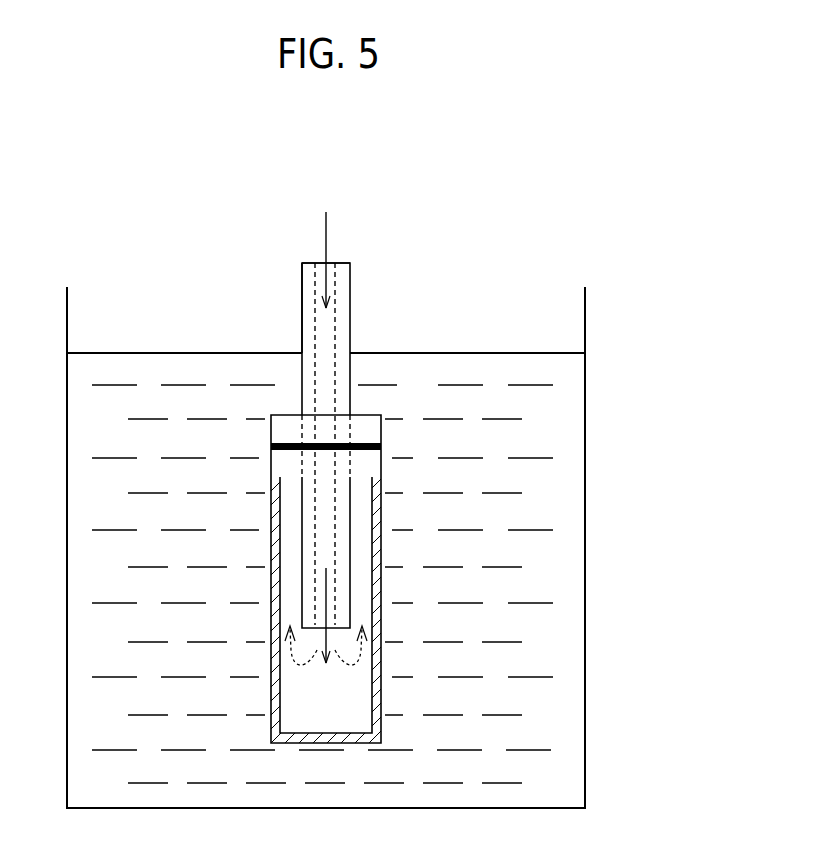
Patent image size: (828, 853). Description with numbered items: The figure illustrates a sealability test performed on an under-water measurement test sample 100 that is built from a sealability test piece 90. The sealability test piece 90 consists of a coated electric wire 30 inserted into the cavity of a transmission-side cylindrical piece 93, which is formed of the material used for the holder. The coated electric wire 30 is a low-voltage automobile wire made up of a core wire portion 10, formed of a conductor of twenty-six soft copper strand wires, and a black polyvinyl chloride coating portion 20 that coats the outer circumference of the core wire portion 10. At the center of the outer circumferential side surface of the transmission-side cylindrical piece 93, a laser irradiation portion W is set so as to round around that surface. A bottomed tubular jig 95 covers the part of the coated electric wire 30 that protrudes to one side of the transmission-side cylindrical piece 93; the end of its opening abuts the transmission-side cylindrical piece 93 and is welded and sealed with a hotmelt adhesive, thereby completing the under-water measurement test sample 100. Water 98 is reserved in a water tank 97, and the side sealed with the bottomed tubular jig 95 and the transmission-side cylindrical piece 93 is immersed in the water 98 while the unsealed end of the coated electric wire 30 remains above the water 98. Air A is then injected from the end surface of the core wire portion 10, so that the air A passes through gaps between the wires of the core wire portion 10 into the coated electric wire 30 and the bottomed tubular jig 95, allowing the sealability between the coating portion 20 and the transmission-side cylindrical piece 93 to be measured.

The core wire portion 10 is at (337, 283).
The coating portion 20 is at (302, 323).
The coated electric wire 30 is at (298, 290).
The sealability test piece 90 is at (363, 347).
The transmission-side cylindrical piece 93 is at (363, 413).
The bottomed tubular jig 95 is at (380, 698).
The water tank 97 is at (587, 575).
The water 98 is at (143, 352).
The under-water measurement test sample 100 is at (388, 518).
The air A is at (327, 240).
The laser irradiation portion W is at (285, 442).